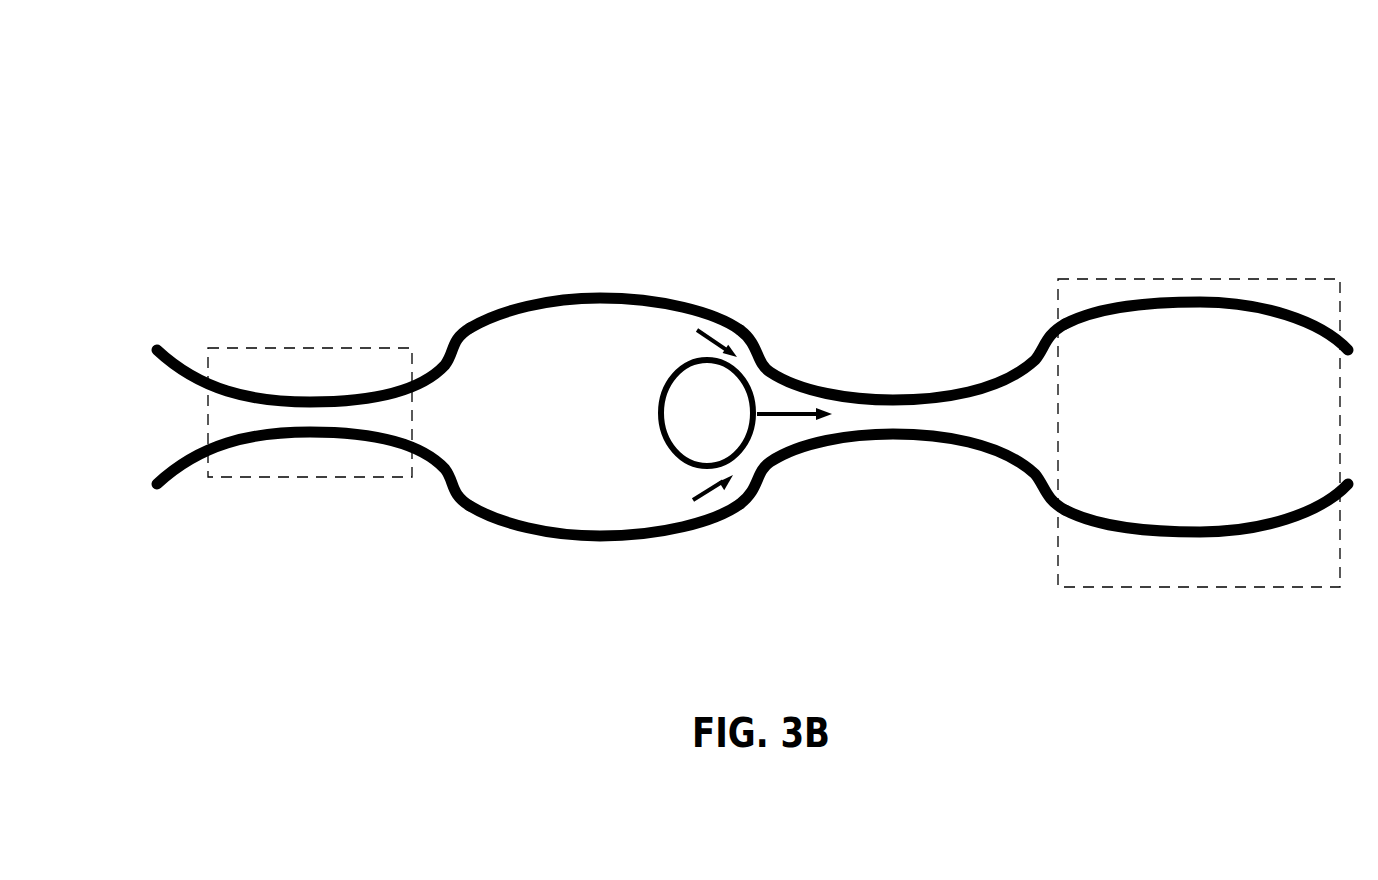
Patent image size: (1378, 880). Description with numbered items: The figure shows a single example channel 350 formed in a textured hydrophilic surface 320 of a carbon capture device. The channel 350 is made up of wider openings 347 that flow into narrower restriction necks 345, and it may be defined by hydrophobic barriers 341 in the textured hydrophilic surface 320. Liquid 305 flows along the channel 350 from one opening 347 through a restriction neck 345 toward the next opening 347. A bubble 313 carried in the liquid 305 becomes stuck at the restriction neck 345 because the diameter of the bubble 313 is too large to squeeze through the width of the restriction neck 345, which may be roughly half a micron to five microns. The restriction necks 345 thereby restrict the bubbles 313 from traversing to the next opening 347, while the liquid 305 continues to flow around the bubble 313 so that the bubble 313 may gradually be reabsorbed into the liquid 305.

The channel 350 is at (1190, 70).
The textured hydrophilic surface 320 is at (184, 432).
The restriction neck 345 is at (925, 277).
The hydrophobic barrier 341 is at (660, 297).
The opening 347 is at (1167, 279).
The bubble 313 is at (722, 424).
The liquid 305 is at (715, 335).